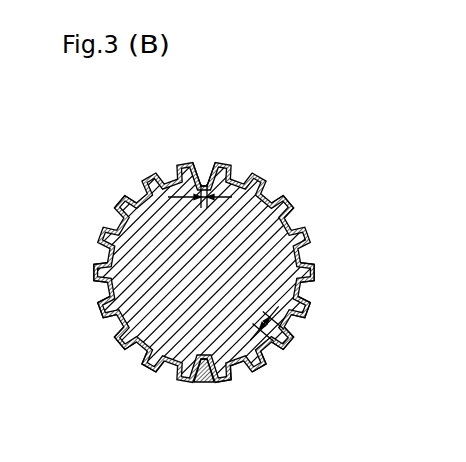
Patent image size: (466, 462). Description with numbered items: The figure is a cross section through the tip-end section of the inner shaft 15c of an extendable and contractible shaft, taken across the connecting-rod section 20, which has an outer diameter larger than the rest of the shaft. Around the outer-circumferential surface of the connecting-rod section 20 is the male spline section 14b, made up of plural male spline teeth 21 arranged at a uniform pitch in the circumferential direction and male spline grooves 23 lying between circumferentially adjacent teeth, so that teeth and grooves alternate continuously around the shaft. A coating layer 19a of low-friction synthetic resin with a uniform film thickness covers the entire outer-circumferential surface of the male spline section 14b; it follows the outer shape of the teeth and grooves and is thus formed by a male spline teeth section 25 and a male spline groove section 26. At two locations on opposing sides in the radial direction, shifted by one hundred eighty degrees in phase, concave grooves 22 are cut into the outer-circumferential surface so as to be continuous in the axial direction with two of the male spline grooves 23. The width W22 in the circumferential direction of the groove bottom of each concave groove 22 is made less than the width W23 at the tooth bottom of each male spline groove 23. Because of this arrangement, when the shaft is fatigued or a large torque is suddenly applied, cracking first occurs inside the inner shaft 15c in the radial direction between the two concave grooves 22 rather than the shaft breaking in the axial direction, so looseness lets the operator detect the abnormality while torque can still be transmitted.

The male spline section 14b is at (298, 199).
The inner shaft 15c is at (122, 190).
The coating layer 19a is at (276, 195).
The connecting-rod section 20 is at (287, 352).
The male spline teeth 21 is at (265, 373).
The concave grooves 22 is at (203, 182).
The male spline grooves 23 is at (309, 253).
The male spline teeth section 25 is at (93, 272).
The male spline groove section 26 is at (167, 373).
The width of the groove bottom of the concave grooves W22 is at (188, 199).
The width at the tooth bottom of the male spline grooves W23 is at (298, 321).